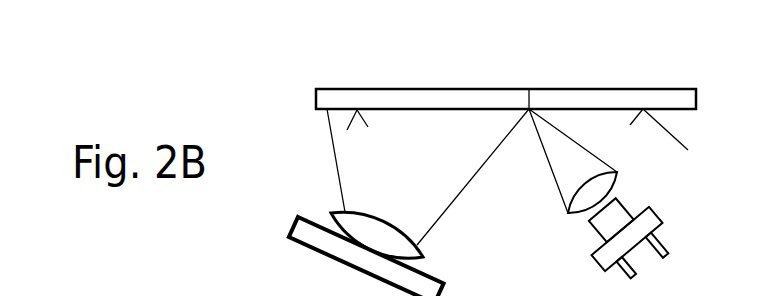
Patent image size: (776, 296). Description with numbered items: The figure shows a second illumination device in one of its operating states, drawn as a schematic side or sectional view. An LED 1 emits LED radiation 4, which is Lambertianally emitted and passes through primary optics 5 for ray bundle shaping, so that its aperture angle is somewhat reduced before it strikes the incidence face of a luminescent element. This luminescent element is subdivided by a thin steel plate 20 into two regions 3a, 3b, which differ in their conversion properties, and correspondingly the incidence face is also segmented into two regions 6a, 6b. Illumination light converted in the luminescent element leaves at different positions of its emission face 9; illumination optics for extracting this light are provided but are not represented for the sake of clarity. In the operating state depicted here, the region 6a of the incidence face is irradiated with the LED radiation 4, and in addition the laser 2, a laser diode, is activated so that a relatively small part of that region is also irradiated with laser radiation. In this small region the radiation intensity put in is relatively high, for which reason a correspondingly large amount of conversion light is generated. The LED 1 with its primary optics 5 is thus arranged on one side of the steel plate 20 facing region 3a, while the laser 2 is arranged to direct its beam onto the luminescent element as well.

The LED 1 is at (320, 243).
The laser 2 is at (612, 225).
The first region of luminescent element 3a is at (338, 100).
The second region of luminescent element 3b is at (592, 98).
The LED radiation 4 is at (412, 193).
The primary optics 5 is at (355, 228).
The first region of incidence face 6a is at (347, 130).
The second region of incidence face 6b is at (677, 140).
The emission face 9 is at (393, 88).
The thin steel plate 20 is at (529, 109).